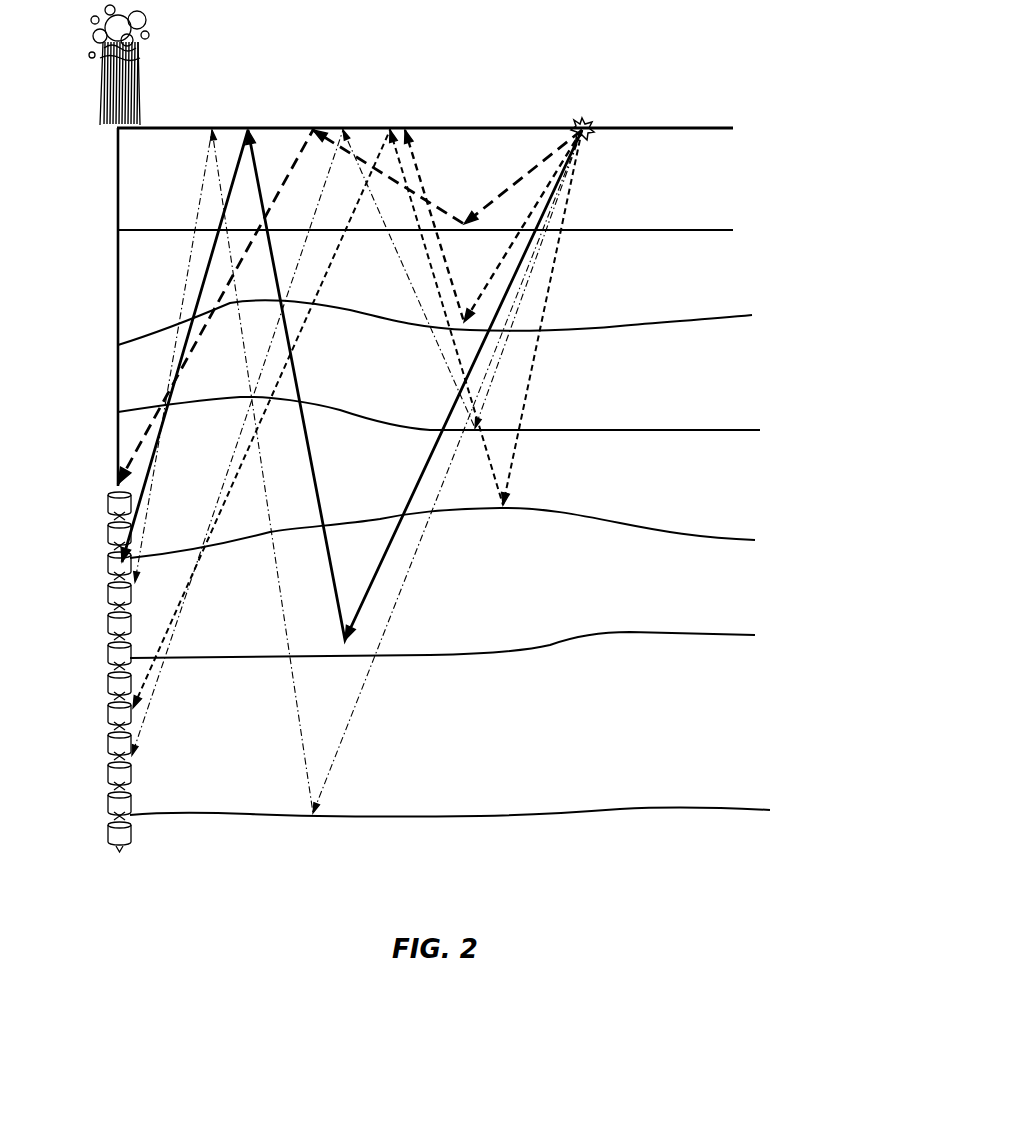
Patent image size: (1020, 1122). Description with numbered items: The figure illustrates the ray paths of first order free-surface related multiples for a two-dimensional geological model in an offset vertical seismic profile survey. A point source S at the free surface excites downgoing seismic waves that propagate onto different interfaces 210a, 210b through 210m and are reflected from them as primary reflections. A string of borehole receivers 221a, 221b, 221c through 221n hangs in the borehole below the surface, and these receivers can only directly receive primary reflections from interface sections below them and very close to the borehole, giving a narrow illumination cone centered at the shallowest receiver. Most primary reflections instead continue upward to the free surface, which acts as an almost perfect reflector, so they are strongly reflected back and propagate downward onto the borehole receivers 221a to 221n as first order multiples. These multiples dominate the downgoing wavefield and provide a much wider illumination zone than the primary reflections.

The interface 210a is at (477, 215).
The interface 210b is at (477, 322).
The interface 210m is at (487, 835).
The borehole receiver 221a is at (79, 514).
The borehole receiver 221b is at (79, 547).
The borehole receiver 221c is at (79, 581).
The borehole receiver 221n is at (79, 822).
The point source S is at (582, 111).